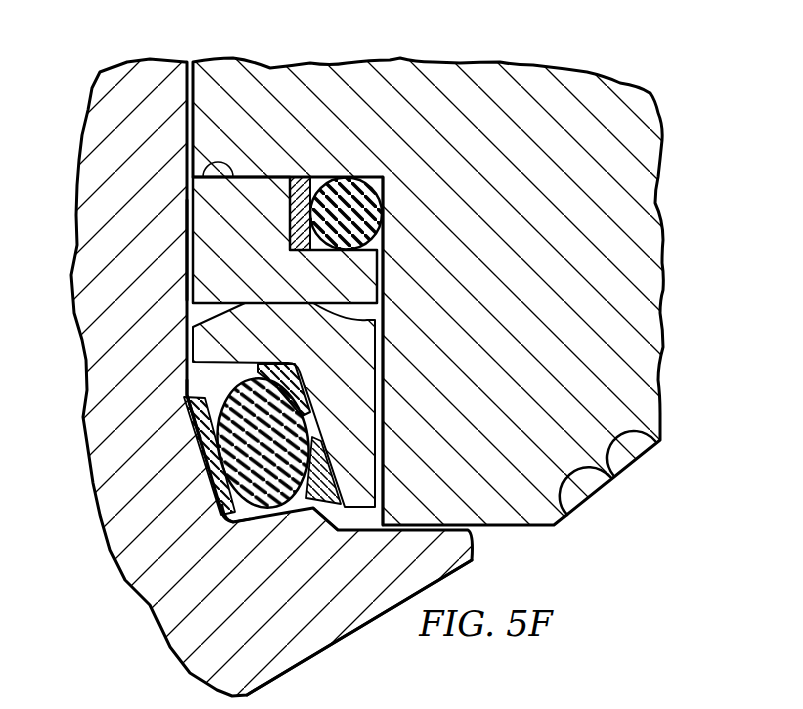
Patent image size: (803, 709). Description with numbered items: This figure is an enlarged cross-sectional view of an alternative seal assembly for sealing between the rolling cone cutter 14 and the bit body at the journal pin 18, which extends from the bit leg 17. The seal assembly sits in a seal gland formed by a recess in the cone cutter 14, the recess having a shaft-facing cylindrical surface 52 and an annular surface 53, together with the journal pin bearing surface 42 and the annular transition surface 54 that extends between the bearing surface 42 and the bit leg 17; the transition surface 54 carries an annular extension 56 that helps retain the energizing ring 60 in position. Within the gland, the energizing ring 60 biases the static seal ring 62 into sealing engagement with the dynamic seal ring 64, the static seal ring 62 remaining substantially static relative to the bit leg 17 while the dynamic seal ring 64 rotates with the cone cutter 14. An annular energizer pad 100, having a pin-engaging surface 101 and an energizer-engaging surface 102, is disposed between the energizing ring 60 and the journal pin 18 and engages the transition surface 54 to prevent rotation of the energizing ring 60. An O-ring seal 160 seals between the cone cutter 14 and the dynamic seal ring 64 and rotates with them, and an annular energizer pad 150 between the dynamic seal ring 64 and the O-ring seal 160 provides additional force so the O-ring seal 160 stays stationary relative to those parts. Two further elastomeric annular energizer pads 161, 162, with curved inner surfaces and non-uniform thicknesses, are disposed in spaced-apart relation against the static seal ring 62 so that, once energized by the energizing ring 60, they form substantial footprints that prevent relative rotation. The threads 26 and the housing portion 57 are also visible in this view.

The cone cutter 14 is at (527, 64).
The bit leg 17 is at (358, 632).
The journal pin 18 is at (85, 118).
The threads 26 is at (640, 483).
The journal pin bearing surface 42 is at (186, 80).
The shaft-facing cylindrical surface 52 is at (386, 291).
The annular surface 53 is at (212, 176).
The annular transition surface 54 is at (183, 394).
The annular extension 56 is at (318, 520).
The housing portion 57 is at (528, 248).
The energizing ring 60 is at (225, 398).
The static seal ring 62 is at (371, 348).
The dynamic seal ring 64 is at (186, 246).
The energizer pad 100 is at (217, 442).
The pin-engaging surface 101 is at (198, 472).
The energizer-engaging surface 102 is at (245, 500).
The annular energizer pad 150 is at (290, 214).
The O-ring seal 160 is at (360, 202).
The annular energizer pad 161 is at (318, 455).
The annular energizer pad 162 is at (302, 388).